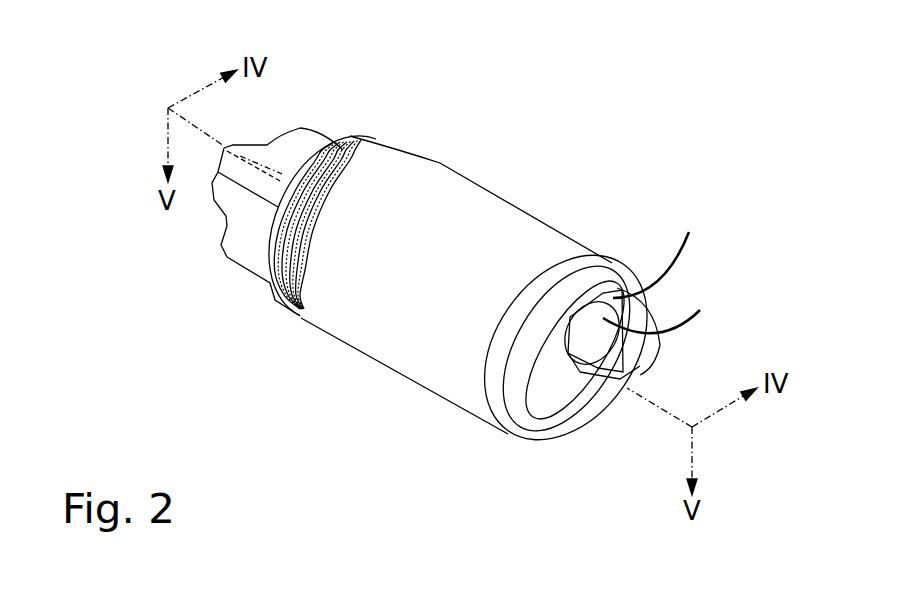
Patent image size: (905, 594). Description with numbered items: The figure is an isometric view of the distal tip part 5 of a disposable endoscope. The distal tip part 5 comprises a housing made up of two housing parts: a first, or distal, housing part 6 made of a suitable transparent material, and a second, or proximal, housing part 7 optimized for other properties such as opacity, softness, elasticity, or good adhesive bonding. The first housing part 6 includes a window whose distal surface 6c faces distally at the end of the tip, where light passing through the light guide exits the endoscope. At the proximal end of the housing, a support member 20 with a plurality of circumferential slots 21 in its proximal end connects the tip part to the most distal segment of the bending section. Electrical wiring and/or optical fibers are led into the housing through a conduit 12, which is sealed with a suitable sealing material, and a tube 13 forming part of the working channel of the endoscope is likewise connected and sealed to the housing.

The distal tip part 5 is at (530, 197).
The first housing part 6 is at (558, 382).
The distal surface 6c is at (546, 392).
The second housing part 7 is at (360, 315).
The conduit 12 is at (307, 130).
The tube 13 is at (227, 222).
The support member 20 is at (363, 150).
The circumferential slots 21 is at (339, 156).